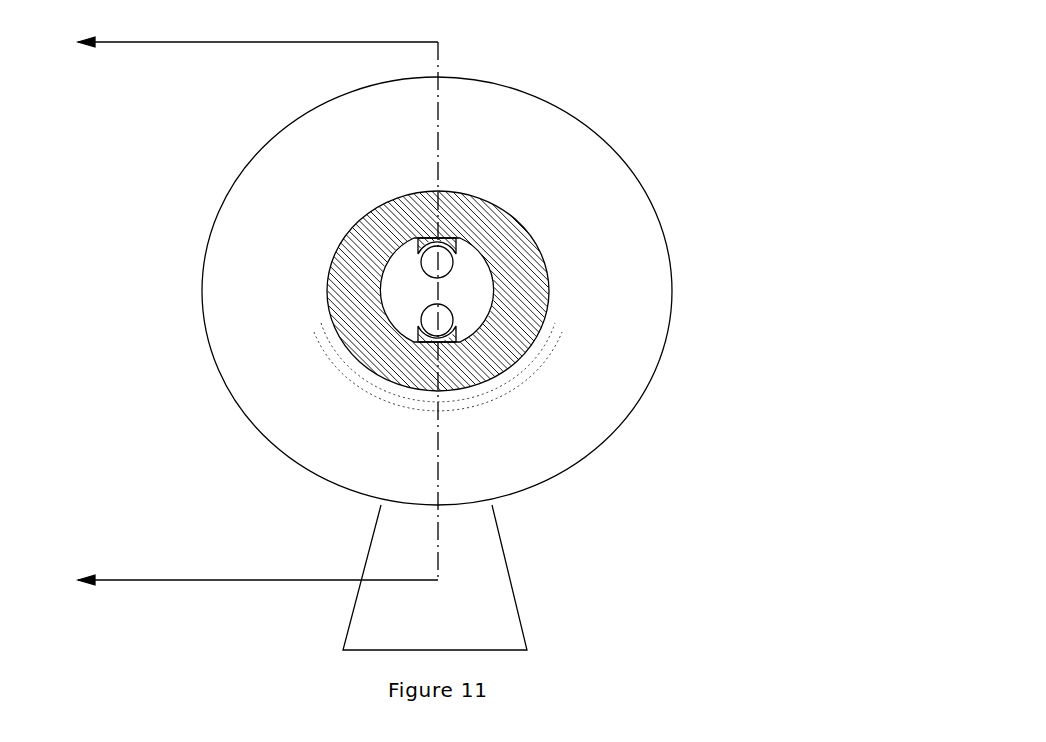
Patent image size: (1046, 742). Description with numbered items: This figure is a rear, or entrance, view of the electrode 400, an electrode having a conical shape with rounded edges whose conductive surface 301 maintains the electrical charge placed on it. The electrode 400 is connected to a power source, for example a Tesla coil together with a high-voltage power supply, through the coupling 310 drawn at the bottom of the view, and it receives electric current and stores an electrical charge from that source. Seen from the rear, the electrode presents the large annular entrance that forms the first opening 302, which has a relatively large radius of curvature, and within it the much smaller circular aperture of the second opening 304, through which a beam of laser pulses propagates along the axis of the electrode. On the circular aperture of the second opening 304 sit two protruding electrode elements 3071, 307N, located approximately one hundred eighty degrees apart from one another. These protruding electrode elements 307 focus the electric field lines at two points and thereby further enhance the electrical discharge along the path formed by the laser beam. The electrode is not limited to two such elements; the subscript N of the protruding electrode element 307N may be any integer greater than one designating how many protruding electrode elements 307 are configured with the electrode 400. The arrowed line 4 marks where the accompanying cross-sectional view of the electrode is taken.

The line 4 is at (257, 580).
The electrode 400 is at (499, 357).
The conductive surface 301 is at (590, 362).
The first opening 302 is at (548, 280).
The second opening 304 is at (492, 272).
The protruding electrode elements 307 is at (279, 403).
The protruding electrode element 307N is at (421, 265).
The protruding electrode element 3071 is at (421, 322).
The coupling 310 is at (502, 617).